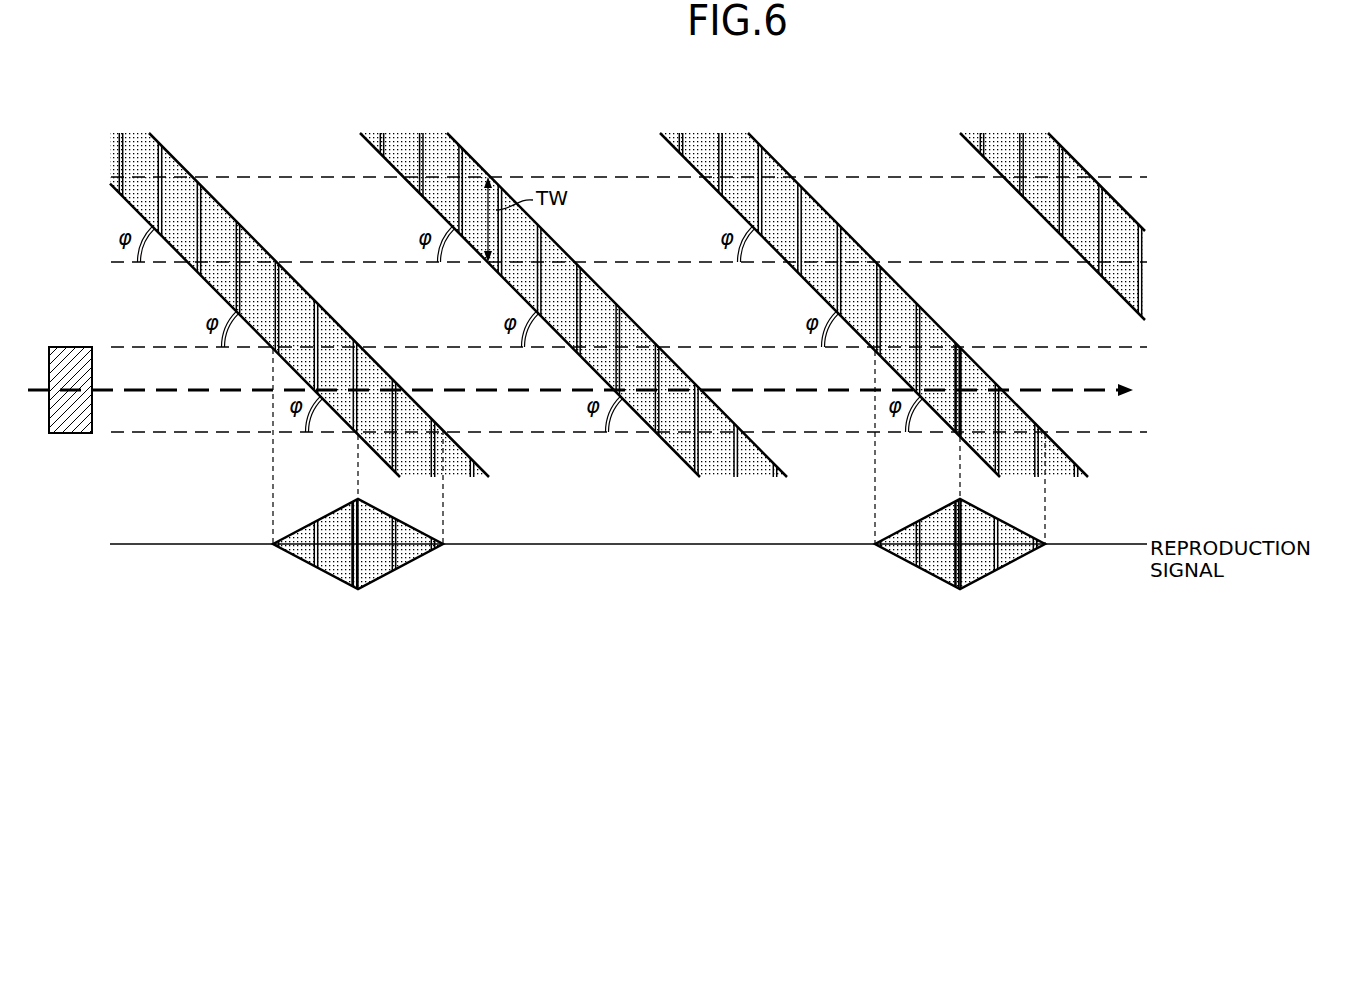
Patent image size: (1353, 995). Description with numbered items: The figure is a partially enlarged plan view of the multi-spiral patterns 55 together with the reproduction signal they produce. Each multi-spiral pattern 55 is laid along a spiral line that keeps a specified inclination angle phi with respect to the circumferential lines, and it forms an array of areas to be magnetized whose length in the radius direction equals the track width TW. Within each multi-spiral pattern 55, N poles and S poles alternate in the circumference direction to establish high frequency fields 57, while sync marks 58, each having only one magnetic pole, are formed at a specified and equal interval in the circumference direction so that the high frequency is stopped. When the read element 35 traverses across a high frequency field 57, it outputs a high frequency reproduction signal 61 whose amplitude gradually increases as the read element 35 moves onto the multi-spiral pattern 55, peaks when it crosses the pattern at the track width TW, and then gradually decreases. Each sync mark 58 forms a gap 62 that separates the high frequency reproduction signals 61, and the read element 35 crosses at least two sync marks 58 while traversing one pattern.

The read element 35 is at (66, 357).
The multi-spiral pattern 55 is at (160, 132).
The high frequency field 57 is at (708, 172).
The sync mark 58 is at (720, 150).
The reproduction signal 61 is at (295, 550).
The gap 62 is at (315, 525).